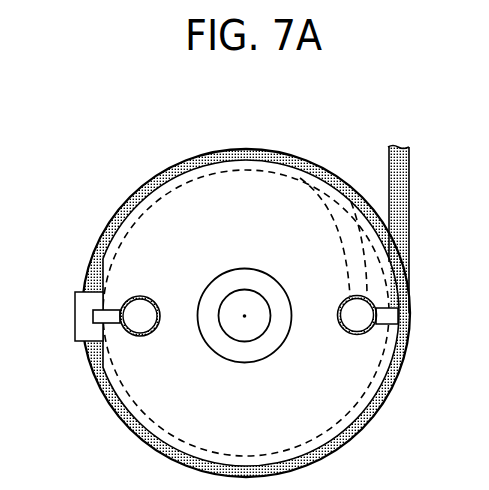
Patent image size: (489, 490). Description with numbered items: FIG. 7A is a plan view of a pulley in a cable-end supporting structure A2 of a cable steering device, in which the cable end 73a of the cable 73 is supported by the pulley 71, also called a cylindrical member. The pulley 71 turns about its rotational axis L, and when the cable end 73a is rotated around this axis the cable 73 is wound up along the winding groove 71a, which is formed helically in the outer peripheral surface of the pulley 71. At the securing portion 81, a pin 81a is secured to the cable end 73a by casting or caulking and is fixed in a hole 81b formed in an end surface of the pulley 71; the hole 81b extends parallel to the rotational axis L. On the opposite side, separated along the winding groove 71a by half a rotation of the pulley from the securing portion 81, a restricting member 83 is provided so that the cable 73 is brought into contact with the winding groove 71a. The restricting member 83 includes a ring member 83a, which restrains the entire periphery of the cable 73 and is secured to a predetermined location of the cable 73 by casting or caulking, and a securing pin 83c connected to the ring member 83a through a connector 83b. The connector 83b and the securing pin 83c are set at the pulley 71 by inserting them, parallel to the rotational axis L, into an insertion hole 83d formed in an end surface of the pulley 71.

The cable end 73a is at (222, 153).
The cable 73 is at (410, 182).
The winding groove 71a is at (143, 185).
The pulley 71 is at (152, 246).
The cable-end supporting structure A2 is at (292, 137).
The rotational axis L is at (247, 311).
The restricting member 83 is at (115, 322).
The ring member 83a is at (80, 333).
The connector 83b is at (113, 325).
The securing pin 83c is at (140, 323).
The insertion hole 83d is at (147, 300).
The securing portion 81 is at (408, 338).
The pin 81a is at (356, 322).
The hole 81b is at (380, 325).